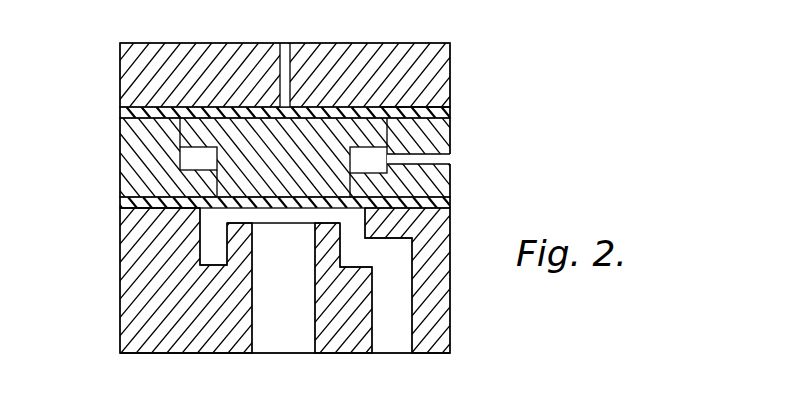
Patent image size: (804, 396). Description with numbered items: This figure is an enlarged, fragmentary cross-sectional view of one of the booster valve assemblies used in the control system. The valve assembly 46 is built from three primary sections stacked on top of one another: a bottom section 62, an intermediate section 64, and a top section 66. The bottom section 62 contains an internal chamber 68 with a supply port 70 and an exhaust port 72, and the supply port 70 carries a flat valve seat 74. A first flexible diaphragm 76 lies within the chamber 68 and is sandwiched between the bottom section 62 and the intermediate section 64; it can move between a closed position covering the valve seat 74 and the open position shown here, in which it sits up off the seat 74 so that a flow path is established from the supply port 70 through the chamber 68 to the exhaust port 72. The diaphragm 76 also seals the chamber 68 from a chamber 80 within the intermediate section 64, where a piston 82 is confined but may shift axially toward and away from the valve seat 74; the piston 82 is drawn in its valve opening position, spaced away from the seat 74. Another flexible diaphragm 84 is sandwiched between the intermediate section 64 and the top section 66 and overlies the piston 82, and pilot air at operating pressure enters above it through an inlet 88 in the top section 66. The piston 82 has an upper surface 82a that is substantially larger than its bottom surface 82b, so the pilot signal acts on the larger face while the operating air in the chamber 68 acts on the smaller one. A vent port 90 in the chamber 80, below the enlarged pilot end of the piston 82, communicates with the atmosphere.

The valve assembly 46 is at (472, 82).
The bottom section 62 is at (128, 337).
The intermediate section 64 is at (122, 181).
The top section 66 is at (128, 75).
The internal chamber 68 is at (207, 226).
The supply port 70 is at (285, 343).
The exhaust port 72 is at (397, 343).
The valve seat 74 is at (240, 223).
The first flexible diaphragm 76 is at (133, 211).
The chamber 80 is at (185, 160).
The piston 82 is at (372, 138).
The upper surface 82a is at (217, 110).
The bottom surface 82b is at (330, 212).
The flexible diaphragm 84 is at (407, 112).
The inlet 88 is at (285, 52).
The vent port 90 is at (433, 158).